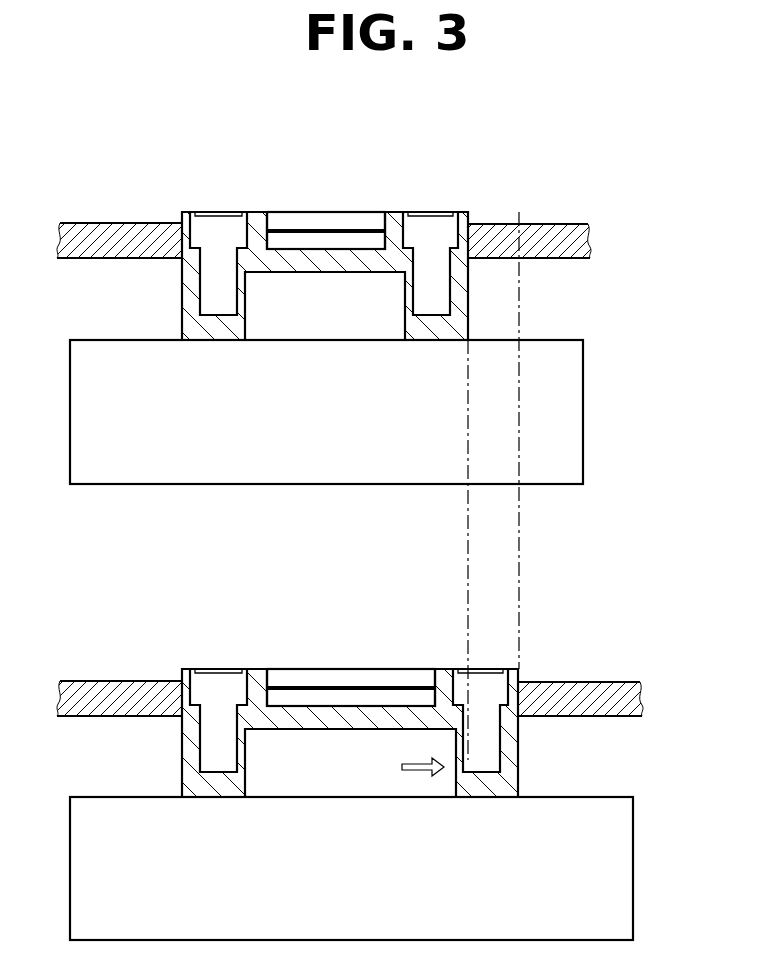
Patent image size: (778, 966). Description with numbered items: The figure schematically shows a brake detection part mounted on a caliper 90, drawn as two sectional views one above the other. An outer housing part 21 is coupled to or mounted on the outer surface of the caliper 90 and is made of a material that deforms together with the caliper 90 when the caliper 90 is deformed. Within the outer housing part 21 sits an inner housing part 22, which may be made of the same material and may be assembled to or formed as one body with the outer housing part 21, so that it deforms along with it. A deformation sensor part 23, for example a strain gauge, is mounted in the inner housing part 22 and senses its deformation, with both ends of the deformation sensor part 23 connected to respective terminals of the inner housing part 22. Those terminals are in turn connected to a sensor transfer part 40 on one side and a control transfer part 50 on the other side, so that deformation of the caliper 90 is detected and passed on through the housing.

The outer housing part 21 is at (392, 222).
The inner housing part 22 is at (372, 225).
The deformation sensor part 23 is at (298, 225).
The sensor transfer part 40 is at (97, 222).
The control transfer part 50 is at (554, 224).
The caliper 90 is at (583, 380).